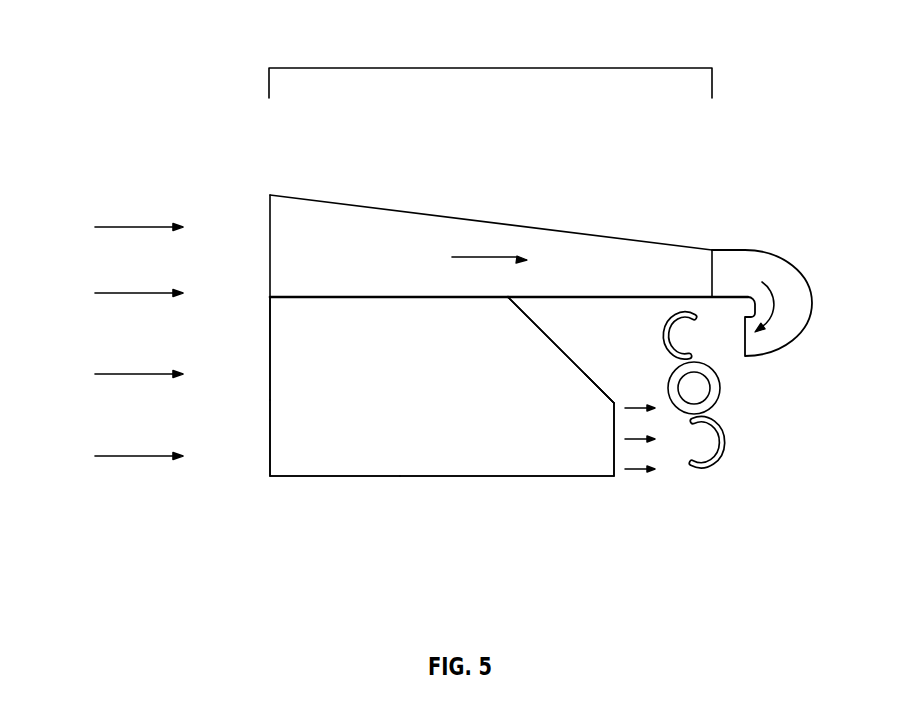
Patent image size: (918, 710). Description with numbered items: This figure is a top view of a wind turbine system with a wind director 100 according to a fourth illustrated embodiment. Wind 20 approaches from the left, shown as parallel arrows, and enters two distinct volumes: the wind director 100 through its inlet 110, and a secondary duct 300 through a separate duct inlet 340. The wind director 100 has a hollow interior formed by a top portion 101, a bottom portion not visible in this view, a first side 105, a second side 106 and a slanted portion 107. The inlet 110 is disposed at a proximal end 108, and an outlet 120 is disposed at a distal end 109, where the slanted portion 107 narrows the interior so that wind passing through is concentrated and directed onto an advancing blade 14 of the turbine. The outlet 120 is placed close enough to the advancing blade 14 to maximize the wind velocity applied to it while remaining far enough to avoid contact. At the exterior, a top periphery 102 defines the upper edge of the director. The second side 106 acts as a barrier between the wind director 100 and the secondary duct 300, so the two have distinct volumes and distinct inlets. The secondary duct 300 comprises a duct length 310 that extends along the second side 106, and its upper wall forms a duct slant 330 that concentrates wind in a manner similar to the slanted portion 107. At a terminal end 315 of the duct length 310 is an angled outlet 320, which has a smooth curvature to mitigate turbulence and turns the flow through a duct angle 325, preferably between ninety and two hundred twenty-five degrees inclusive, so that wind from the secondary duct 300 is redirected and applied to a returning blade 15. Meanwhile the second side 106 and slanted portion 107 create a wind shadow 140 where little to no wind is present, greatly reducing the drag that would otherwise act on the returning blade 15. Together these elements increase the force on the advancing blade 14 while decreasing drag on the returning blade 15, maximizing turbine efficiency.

The advancing blade 14 is at (727, 444).
The returning blade 15 is at (665, 333).
The wind 20 is at (85, 260).
The wind director 100 is at (211, 148).
The top portion 101 is at (458, 401).
The top periphery 102 is at (342, 478).
The first side 105 is at (443, 478).
The second side 106 is at (366, 298).
The slanted portion 107 is at (547, 337).
The proximal end 108 is at (269, 428).
The distal end 109 is at (594, 381).
The inlet 110 is at (269, 373).
The outlet 120 is at (613, 464).
The wind shadow 140 is at (587, 331).
The secondary duct 300 is at (447, 172).
The duct length 310 is at (490, 64).
The terminal end 315 is at (714, 248).
The angled outlet 320 is at (805, 280).
The duct angle 325 is at (741, 306).
The duct slant 330 is at (358, 205).
The duct inlet 340 is at (270, 265).